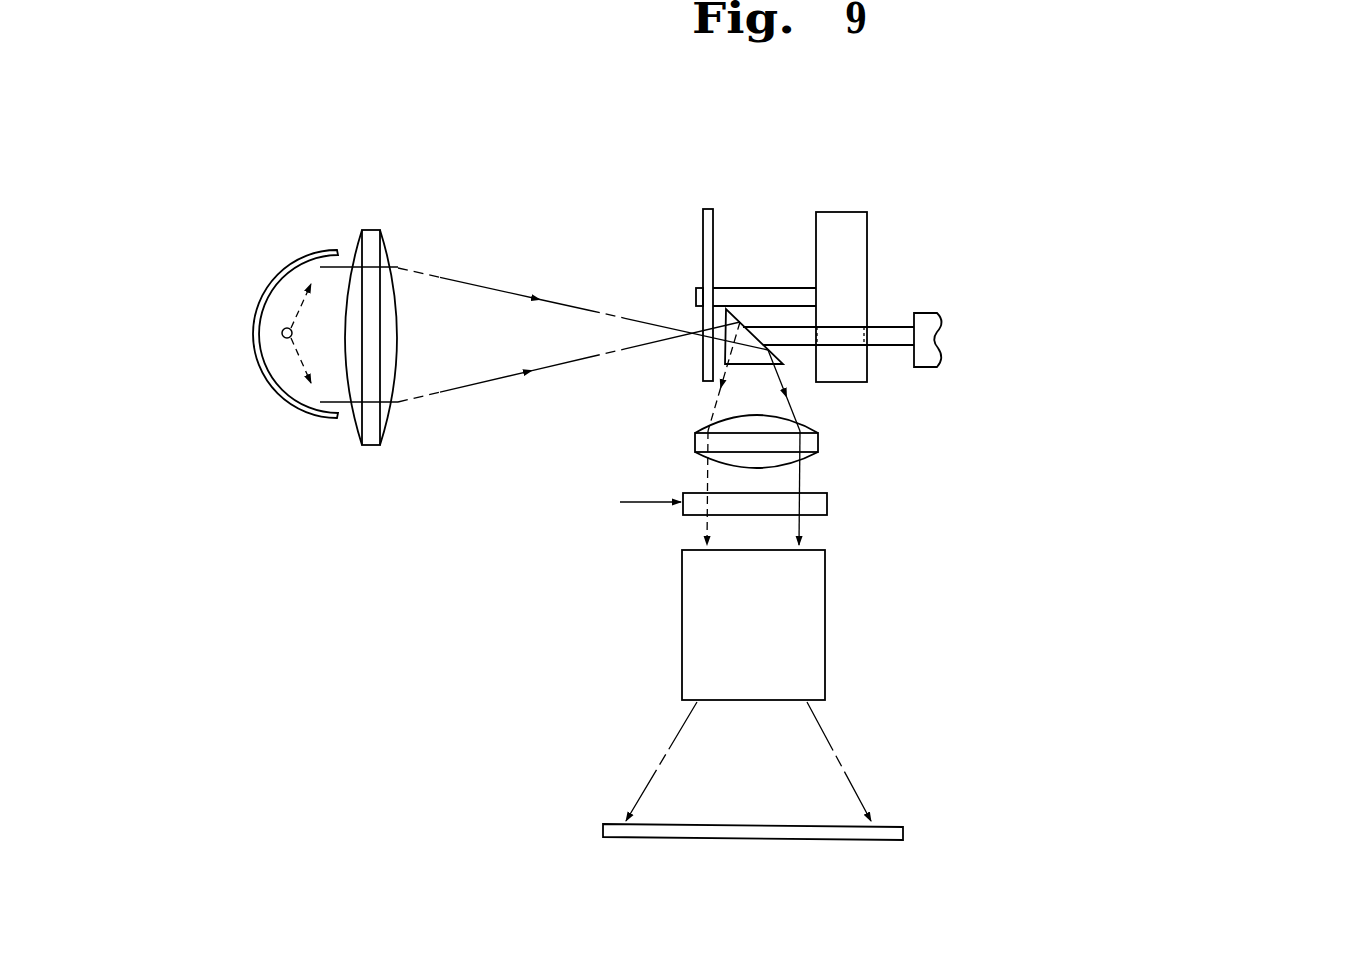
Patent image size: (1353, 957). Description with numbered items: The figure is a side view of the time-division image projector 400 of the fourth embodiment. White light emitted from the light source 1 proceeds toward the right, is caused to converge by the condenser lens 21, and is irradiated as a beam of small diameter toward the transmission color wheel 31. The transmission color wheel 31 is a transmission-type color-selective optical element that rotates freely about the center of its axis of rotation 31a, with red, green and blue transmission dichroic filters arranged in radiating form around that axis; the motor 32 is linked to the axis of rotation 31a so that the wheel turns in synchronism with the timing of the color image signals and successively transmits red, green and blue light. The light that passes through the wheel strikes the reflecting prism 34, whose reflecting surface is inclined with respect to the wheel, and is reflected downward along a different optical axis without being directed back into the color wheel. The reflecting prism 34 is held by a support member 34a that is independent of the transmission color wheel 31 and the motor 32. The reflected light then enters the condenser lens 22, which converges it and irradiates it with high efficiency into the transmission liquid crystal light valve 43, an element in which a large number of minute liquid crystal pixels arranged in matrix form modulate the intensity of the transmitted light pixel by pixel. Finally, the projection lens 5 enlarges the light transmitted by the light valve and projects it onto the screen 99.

The light source 1 is at (278, 290).
The condenser lens 21 is at (375, 228).
The transmission color wheel 31 is at (703, 235).
The axis of rotation 31a is at (760, 293).
The motor 32 is at (867, 248).
The reflecting prism 34 is at (770, 357).
The support member 34a is at (940, 333).
The condenser lens 22 is at (818, 443).
The transmission liquid crystal light valve 43 is at (827, 498).
The projection lens 5 is at (823, 602).
The screen 99 is at (903, 832).
The time-division image projector 400 is at (984, 250).